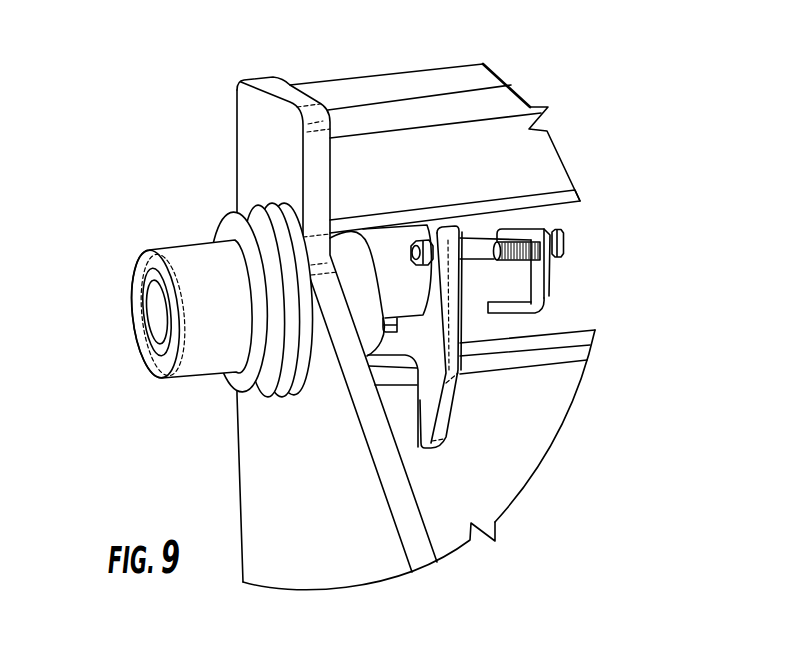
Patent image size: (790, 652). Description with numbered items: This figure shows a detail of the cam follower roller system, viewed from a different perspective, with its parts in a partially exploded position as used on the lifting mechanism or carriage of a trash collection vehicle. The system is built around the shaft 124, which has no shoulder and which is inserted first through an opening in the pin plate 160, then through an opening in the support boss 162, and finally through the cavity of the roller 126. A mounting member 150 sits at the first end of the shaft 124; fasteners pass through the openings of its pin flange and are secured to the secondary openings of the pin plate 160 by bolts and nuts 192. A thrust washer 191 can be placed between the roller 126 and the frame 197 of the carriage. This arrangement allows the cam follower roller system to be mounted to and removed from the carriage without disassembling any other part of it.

The frame 197 is at (273, 81).
The thrust washer 191 is at (242, 212).
The roller 126 is at (188, 252).
The support boss 162 is at (358, 251).
The bolts and nuts 192 is at (418, 239).
The pin plate 160 is at (466, 213).
The shaft 124 is at (479, 247).
The mounting member 150 is at (535, 270).